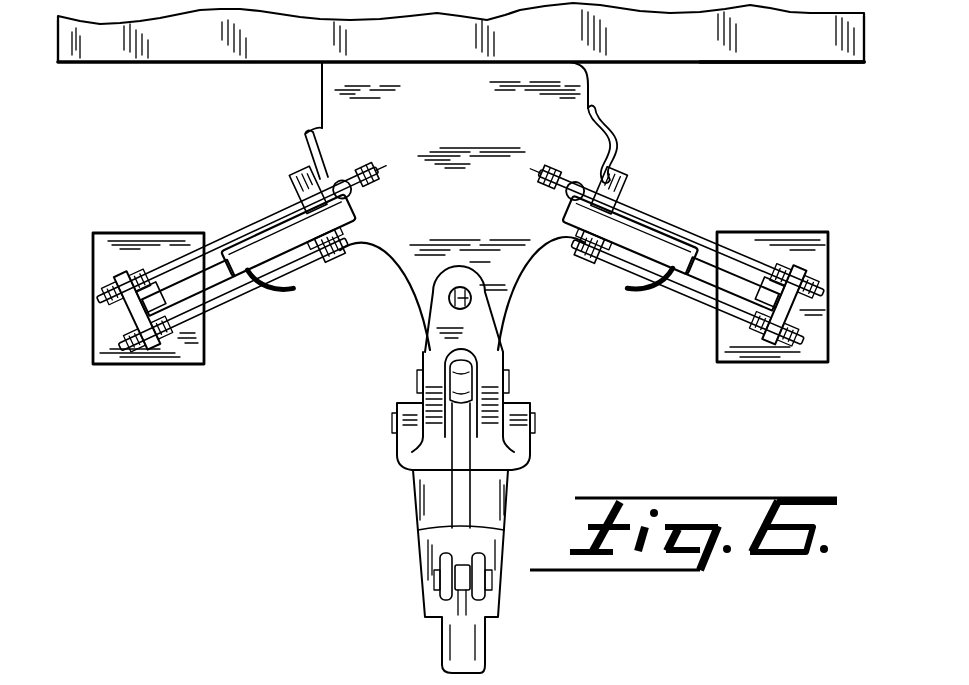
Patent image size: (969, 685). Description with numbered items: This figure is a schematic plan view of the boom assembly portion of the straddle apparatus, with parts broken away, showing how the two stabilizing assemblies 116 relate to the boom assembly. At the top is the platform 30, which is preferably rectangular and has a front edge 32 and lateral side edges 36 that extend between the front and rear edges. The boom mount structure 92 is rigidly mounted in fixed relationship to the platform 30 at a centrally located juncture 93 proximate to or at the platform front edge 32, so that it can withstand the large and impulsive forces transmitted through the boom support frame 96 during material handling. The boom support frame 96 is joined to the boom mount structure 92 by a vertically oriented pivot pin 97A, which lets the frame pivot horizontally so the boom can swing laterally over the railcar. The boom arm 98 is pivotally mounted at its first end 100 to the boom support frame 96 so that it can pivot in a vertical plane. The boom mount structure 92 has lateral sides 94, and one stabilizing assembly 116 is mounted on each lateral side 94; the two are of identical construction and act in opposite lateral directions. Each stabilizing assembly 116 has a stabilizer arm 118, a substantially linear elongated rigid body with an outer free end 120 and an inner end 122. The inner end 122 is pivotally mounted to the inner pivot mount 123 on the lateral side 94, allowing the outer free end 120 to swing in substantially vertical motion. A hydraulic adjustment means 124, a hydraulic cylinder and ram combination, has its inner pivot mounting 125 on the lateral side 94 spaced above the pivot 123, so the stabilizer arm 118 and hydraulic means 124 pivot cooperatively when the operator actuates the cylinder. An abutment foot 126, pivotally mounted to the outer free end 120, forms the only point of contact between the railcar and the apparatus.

The platform 30 is at (424, 52).
The front edge 32 is at (780, 63).
The lateral side edges 36 is at (57, 52).
The boom mount structure 92 is at (438, 113).
The centrally located juncture 93 is at (592, 82).
The lateral sides 94 is at (322, 103).
The boom support frame 96 is at (432, 342).
The pivot pin 97A is at (465, 302).
The boom arm 98 is at (415, 505).
The first end 100 is at (527, 403).
The stabilizing assembly 116 is at (268, 205).
The stabilizer arm 118 is at (222, 286).
The outer free end 120 is at (120, 313).
The inner end 122 is at (330, 238).
The inner pivot mount 123 is at (298, 178).
The hydraulic adjustment means 124 is at (247, 240).
The inner pivot mounting 125 is at (372, 192).
The abutment foot 126 is at (187, 355).